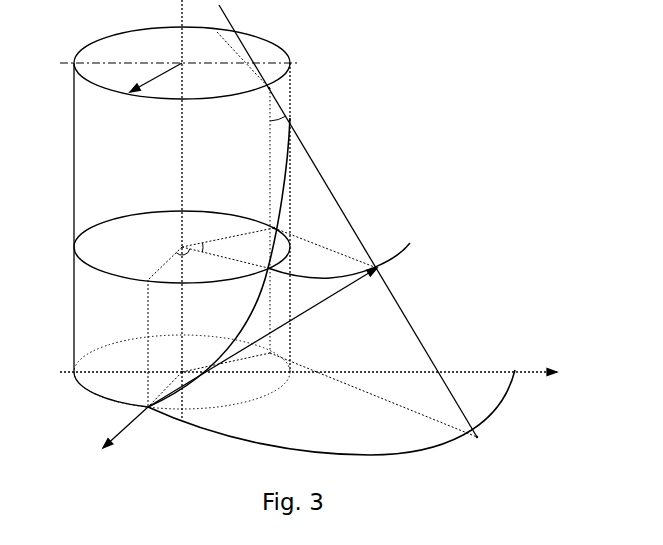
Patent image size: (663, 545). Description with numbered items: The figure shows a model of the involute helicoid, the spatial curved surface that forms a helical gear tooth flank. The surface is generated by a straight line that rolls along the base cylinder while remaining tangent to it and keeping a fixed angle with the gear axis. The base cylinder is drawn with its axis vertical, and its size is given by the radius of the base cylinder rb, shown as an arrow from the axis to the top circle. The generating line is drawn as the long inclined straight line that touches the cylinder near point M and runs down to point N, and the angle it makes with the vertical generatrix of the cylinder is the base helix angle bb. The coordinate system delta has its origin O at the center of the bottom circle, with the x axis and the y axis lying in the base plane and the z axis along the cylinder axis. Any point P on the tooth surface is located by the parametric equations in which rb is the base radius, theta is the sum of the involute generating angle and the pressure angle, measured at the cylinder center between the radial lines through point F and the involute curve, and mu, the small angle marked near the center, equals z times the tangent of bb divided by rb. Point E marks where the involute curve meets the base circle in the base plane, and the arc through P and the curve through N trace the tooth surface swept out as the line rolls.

The radius of the base cylinder rb is at (156, 77).
The point M on base cylinder M is at (277, 95).
The base helix angle bb is at (278, 130).
The point F on involute F is at (317, 237).
The sum of the involute generating angle and the pressure angle theta is at (210, 249).
The angle mu is at (183, 260).
The point on the tooth surface P is at (279, 325).
The point E on base circle E is at (329, 386).
The origin of the coordinate system O is at (173, 363).
The x coordinate axis x is at (125, 428).
The y coordinate axis y is at (308, 391).
The point N is at (484, 447).